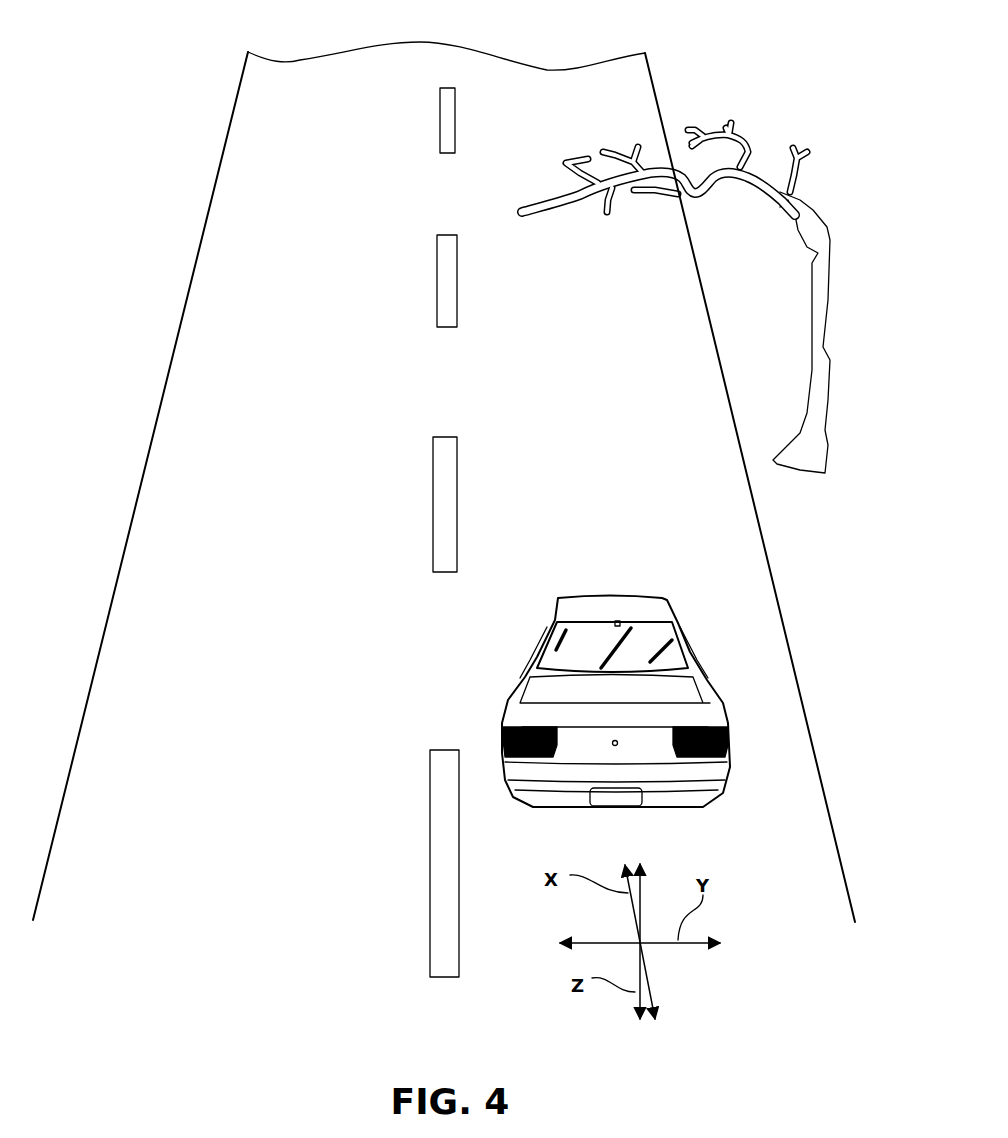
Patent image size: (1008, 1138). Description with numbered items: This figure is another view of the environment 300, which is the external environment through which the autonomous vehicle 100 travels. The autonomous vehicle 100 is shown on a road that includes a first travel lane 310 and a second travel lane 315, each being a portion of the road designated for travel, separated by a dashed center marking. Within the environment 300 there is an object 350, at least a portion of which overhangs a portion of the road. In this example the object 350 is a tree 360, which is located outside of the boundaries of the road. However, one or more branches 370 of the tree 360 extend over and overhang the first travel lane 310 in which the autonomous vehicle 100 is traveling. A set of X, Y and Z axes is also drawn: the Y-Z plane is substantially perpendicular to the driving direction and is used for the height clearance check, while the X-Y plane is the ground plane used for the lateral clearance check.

The autonomous vehicle 100 is at (720, 692).
The environment 300 is at (152, 78).
The first travel lane 310 is at (531, 580).
The second travel lane 315 is at (372, 575).
The object 350 is at (751, 112).
The tree 360 is at (810, 370).
The branches 370 is at (593, 222).